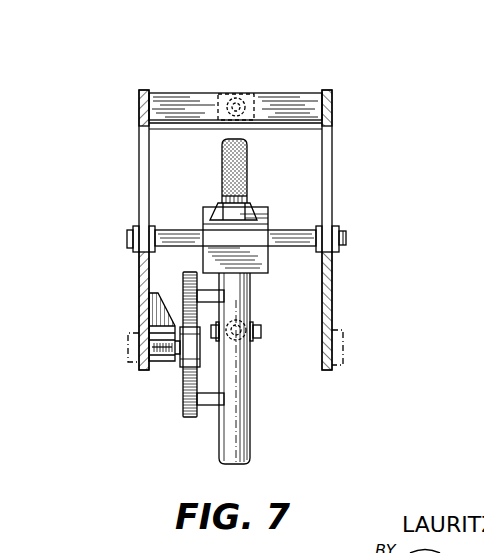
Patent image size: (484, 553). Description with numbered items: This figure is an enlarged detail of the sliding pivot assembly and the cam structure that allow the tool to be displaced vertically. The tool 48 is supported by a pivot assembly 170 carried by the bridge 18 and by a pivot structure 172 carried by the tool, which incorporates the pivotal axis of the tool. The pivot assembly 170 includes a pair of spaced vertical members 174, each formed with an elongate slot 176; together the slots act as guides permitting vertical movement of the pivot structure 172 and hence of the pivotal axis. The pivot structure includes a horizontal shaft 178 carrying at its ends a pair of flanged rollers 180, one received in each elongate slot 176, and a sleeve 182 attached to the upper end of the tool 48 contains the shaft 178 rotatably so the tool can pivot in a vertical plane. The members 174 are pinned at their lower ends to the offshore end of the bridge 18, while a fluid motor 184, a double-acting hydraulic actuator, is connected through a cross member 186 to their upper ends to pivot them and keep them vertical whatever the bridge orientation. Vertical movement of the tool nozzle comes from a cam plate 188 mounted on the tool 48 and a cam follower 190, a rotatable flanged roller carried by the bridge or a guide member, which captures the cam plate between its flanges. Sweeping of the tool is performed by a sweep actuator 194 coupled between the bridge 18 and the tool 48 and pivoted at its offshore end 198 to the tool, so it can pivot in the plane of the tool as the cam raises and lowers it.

The pivot assembly 170 is at (344, 177).
The vertical members 174 is at (143, 280).
The elongate slot 176 is at (143, 147).
The cross member 186 is at (189, 112).
The fluid motor 184 is at (246, 102).
The sleeve 182 is at (173, 233).
The pivot structure 172 is at (290, 229).
The flanged rollers 180 is at (134, 232).
The horizontal shaft 178 is at (346, 238).
The cam follower 190 is at (183, 362).
The cam plate 188 is at (186, 400).
The tool 48 is at (240, 433).
The sweep actuator 194 is at (247, 316).
The offshore end 198 is at (260, 340).
The bridge 18 is at (128, 351).